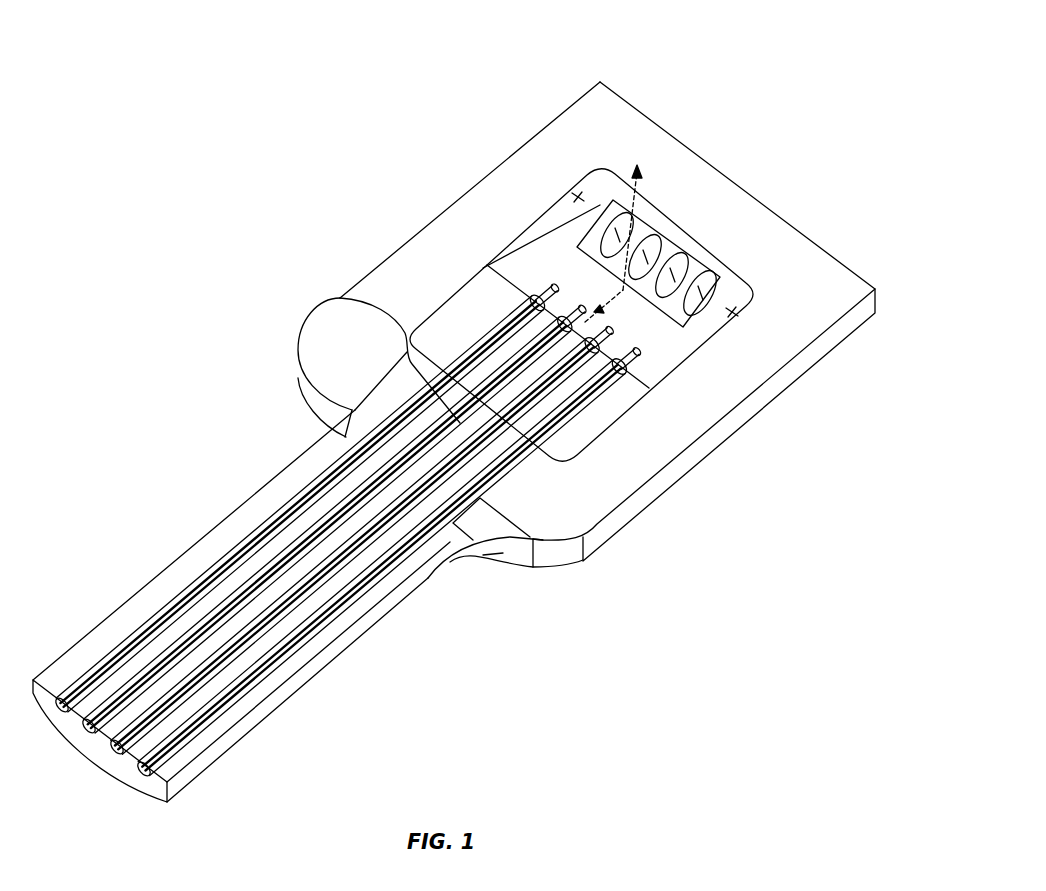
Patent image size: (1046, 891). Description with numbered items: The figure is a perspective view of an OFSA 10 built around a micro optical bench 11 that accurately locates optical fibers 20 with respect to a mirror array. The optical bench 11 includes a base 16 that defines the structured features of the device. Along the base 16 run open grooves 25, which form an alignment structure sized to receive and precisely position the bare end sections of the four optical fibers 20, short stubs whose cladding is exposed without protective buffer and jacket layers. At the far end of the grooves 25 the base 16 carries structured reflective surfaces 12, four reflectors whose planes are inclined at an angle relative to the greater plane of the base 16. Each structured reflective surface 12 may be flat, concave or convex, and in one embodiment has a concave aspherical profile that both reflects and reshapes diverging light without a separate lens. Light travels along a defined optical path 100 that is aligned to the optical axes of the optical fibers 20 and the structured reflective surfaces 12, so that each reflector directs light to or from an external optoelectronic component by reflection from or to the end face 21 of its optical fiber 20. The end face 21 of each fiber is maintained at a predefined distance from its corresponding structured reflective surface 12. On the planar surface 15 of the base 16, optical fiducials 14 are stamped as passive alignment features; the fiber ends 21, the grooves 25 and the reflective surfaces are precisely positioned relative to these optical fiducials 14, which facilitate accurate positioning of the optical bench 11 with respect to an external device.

The OFSA 10 is at (207, 267).
The micro optical bench 11 is at (507, 263).
The structured reflective surfaces 12 is at (690, 245).
The optical fiducials 14 is at (577, 195).
The planar surface 15 is at (628, 130).
The base 16 is at (655, 487).
The optical fibers 20 is at (640, 360).
The end face 21 is at (650, 345).
The open grooves 25 is at (340, 298).
The optical path 100 is at (640, 213).